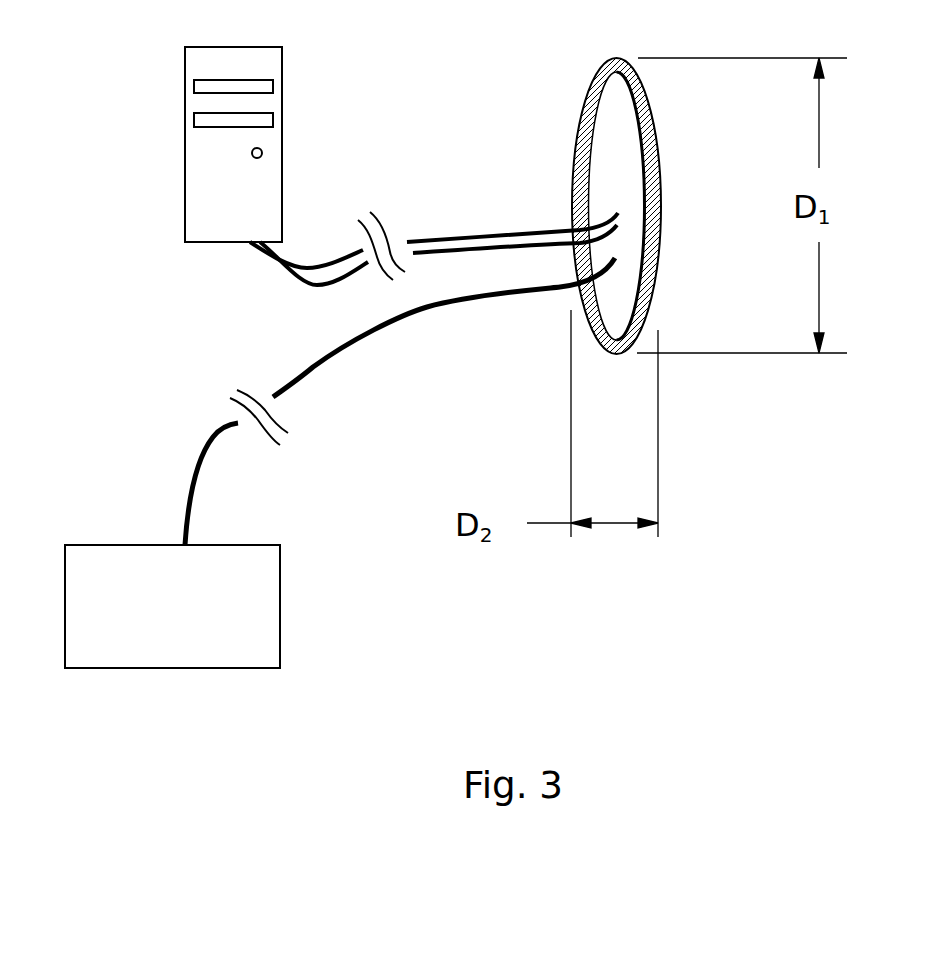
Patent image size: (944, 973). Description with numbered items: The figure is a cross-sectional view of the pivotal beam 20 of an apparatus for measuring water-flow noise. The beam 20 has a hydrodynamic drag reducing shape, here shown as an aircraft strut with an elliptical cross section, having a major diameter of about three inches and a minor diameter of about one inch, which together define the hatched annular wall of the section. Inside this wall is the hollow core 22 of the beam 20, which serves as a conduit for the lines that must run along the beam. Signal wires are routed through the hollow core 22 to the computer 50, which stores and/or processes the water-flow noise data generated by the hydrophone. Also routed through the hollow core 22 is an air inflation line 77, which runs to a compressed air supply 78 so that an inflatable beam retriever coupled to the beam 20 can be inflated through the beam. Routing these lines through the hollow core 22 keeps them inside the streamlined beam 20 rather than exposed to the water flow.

The beam 20 is at (590, 85).
The hollow core 22 is at (620, 158).
The computer 50 is at (185, 180).
The air inflation line 77 is at (313, 363).
The compressed air supply 78 is at (280, 602).